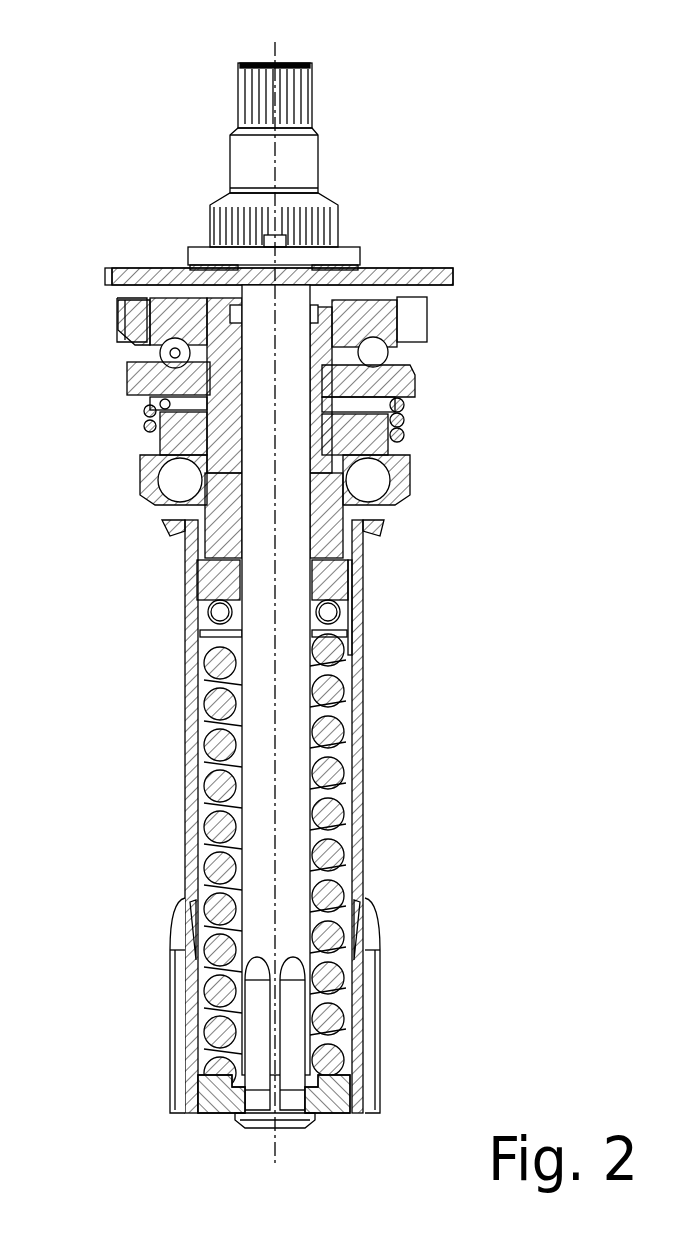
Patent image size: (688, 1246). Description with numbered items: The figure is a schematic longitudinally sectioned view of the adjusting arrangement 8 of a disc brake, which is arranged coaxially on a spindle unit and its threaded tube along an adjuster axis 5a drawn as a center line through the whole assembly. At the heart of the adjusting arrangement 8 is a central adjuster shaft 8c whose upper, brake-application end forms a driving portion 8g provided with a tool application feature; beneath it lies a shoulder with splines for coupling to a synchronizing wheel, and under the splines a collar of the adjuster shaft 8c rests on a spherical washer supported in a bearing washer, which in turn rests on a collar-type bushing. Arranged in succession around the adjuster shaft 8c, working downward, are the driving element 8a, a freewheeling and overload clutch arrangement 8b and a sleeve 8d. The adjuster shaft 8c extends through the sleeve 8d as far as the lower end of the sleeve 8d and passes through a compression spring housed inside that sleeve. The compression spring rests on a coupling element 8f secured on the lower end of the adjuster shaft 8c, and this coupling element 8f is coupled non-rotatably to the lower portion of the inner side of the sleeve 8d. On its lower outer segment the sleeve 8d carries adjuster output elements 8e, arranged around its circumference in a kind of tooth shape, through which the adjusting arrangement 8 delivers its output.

The adjuster axis 5a is at (278, 48).
The adjusting arrangement 8 is at (395, 147).
The driving element 8a is at (417, 383).
The freewheeling and overload clutch arrangement 8b is at (445, 483).
The adjuster shaft 8c is at (290, 693).
The sleeve 8d is at (362, 818).
The adjuster output elements 8e is at (175, 1043).
The coupling element 8f is at (222, 1108).
The driving portion 8g is at (248, 92).